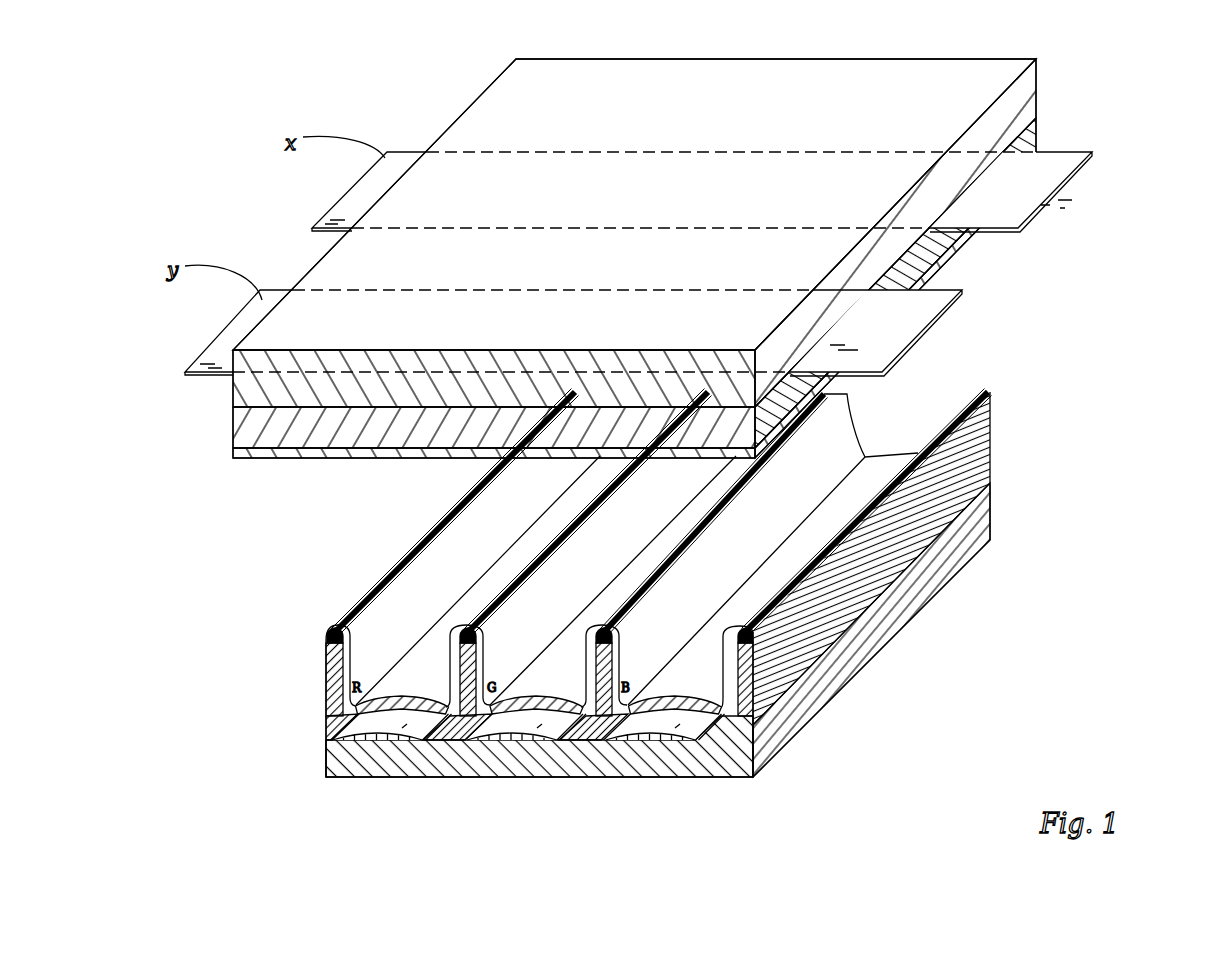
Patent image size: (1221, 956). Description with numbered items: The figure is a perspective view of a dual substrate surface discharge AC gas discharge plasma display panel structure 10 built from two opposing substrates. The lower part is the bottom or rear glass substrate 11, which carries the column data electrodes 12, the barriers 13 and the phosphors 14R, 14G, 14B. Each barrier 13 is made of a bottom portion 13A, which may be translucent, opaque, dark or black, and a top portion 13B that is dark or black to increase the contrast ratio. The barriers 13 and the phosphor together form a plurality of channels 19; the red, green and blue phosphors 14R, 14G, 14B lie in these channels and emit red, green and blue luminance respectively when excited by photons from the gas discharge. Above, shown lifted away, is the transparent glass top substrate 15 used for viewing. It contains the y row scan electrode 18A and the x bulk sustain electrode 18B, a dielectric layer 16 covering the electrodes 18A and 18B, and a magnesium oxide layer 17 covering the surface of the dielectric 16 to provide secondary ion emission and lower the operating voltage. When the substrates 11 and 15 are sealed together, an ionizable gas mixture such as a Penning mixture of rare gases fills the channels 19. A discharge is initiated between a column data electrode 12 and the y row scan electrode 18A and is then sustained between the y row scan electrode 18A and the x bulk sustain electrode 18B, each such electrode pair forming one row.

The plasma display panel structure 10 is at (418, 83).
The bottom substrate 11 is at (330, 778).
The electrode 12 is at (402, 735).
The barrier 13 is at (626, 583).
The bottom portion 13A is at (328, 680).
The top portion 13B is at (328, 634).
The phosphor 14R is at (455, 712).
The phosphor 14G is at (590, 712).
The phosphor 14B is at (725, 712).
The top substrate 15 is at (1025, 104).
The dielectric layer 16 is at (234, 436).
The magnesium oxide layer 17 is at (303, 458).
The y row scan electrode 18A is at (927, 305).
The x bulk sustain electrode 18B is at (1062, 165).
The channel 19 is at (590, 604).